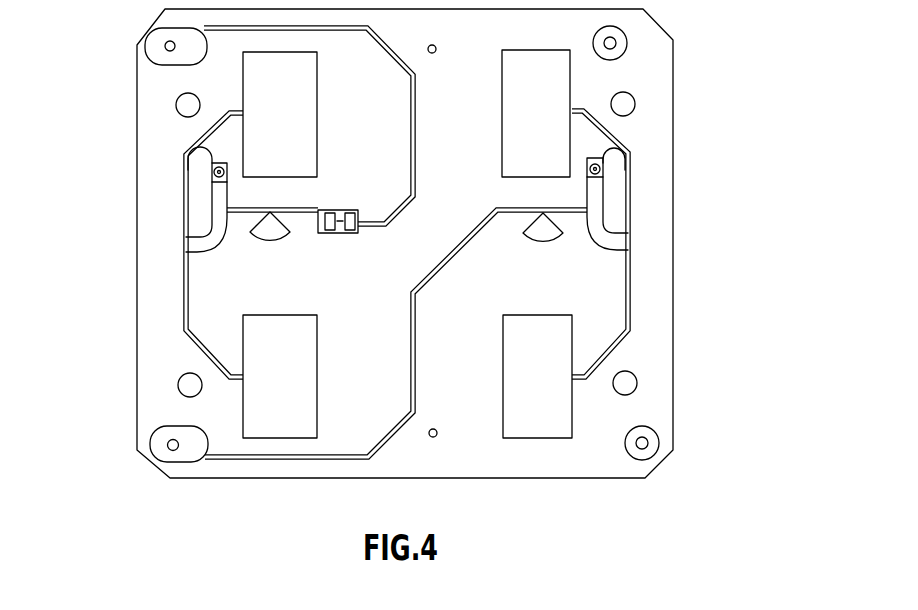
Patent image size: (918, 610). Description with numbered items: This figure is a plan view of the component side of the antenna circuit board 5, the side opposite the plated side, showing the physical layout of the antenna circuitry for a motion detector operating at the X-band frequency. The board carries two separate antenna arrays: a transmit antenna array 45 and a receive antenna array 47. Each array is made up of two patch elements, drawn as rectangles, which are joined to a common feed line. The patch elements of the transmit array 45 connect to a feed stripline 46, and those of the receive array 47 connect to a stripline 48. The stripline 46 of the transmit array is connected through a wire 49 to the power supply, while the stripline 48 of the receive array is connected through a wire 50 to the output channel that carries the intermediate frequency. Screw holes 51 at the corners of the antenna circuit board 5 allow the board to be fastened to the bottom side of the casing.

The antenna circuit board 5 is at (673, 72).
The transmit antenna array 45 is at (300, 150).
The feed stripline 46 is at (185, 215).
The receive antenna array 47 is at (510, 152).
The stripline 48 is at (630, 278).
The wire 49 is at (195, 150).
The wire 50 is at (603, 172).
The screw holes 51 is at (627, 387).